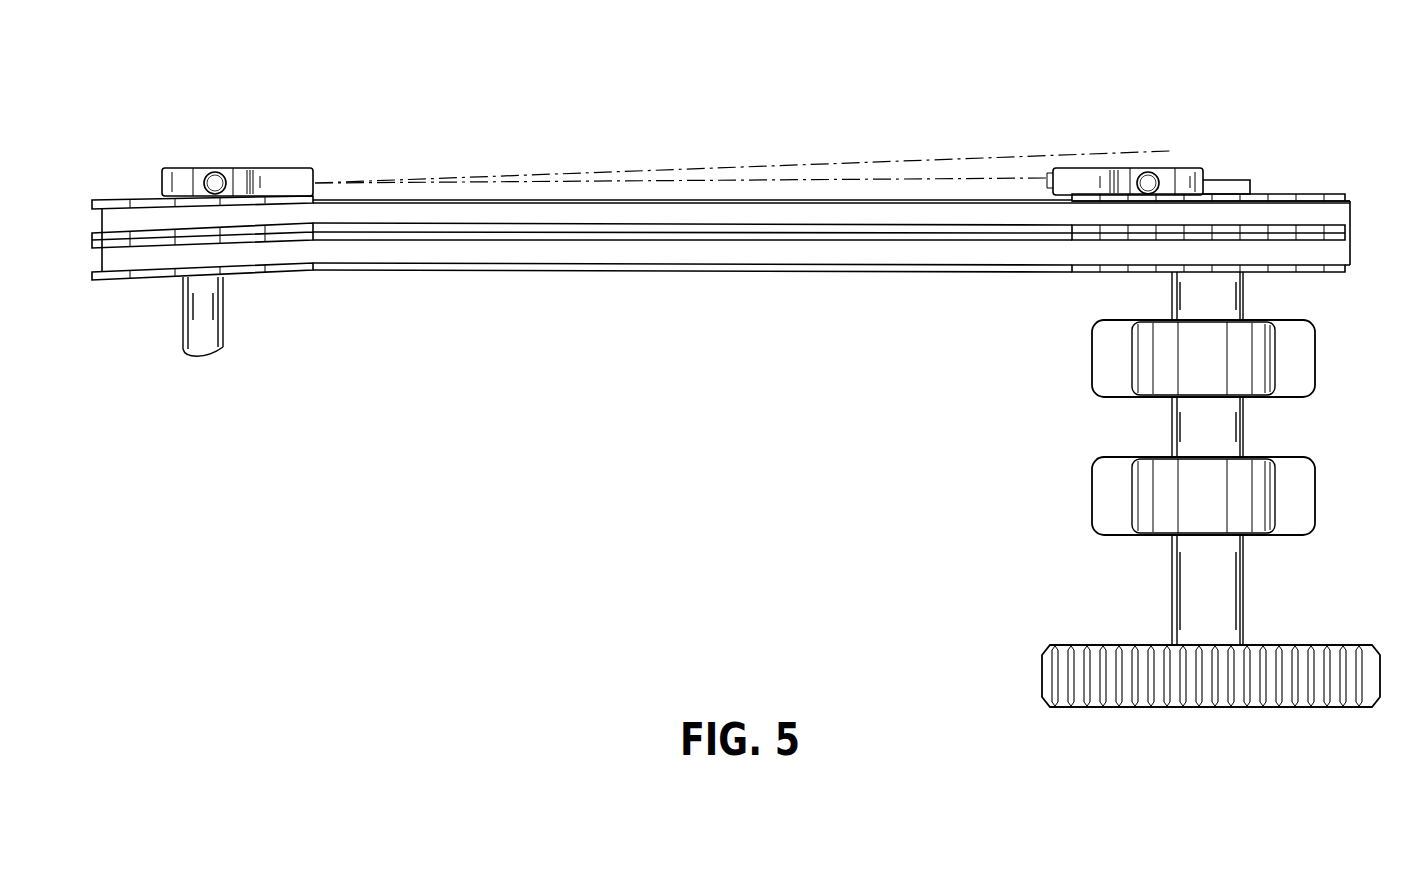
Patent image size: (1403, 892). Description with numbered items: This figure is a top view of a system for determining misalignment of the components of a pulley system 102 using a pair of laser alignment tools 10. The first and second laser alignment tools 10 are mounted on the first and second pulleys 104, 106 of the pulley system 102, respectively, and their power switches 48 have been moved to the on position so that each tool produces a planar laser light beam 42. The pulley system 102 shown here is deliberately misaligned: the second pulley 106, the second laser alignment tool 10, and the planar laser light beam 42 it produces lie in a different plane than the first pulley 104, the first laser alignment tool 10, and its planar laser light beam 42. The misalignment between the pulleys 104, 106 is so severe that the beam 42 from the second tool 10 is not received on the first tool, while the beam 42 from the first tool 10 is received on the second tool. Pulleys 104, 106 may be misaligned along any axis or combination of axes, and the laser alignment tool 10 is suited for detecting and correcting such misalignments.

The laser alignment tool 10 is at (283, 191).
The planar laser light beam 42 is at (935, 178).
The power switch 48 is at (216, 182).
The pulley system 102 is at (975, 322).
The first pulley 104 is at (1333, 212).
The second pulley 106 is at (130, 222).